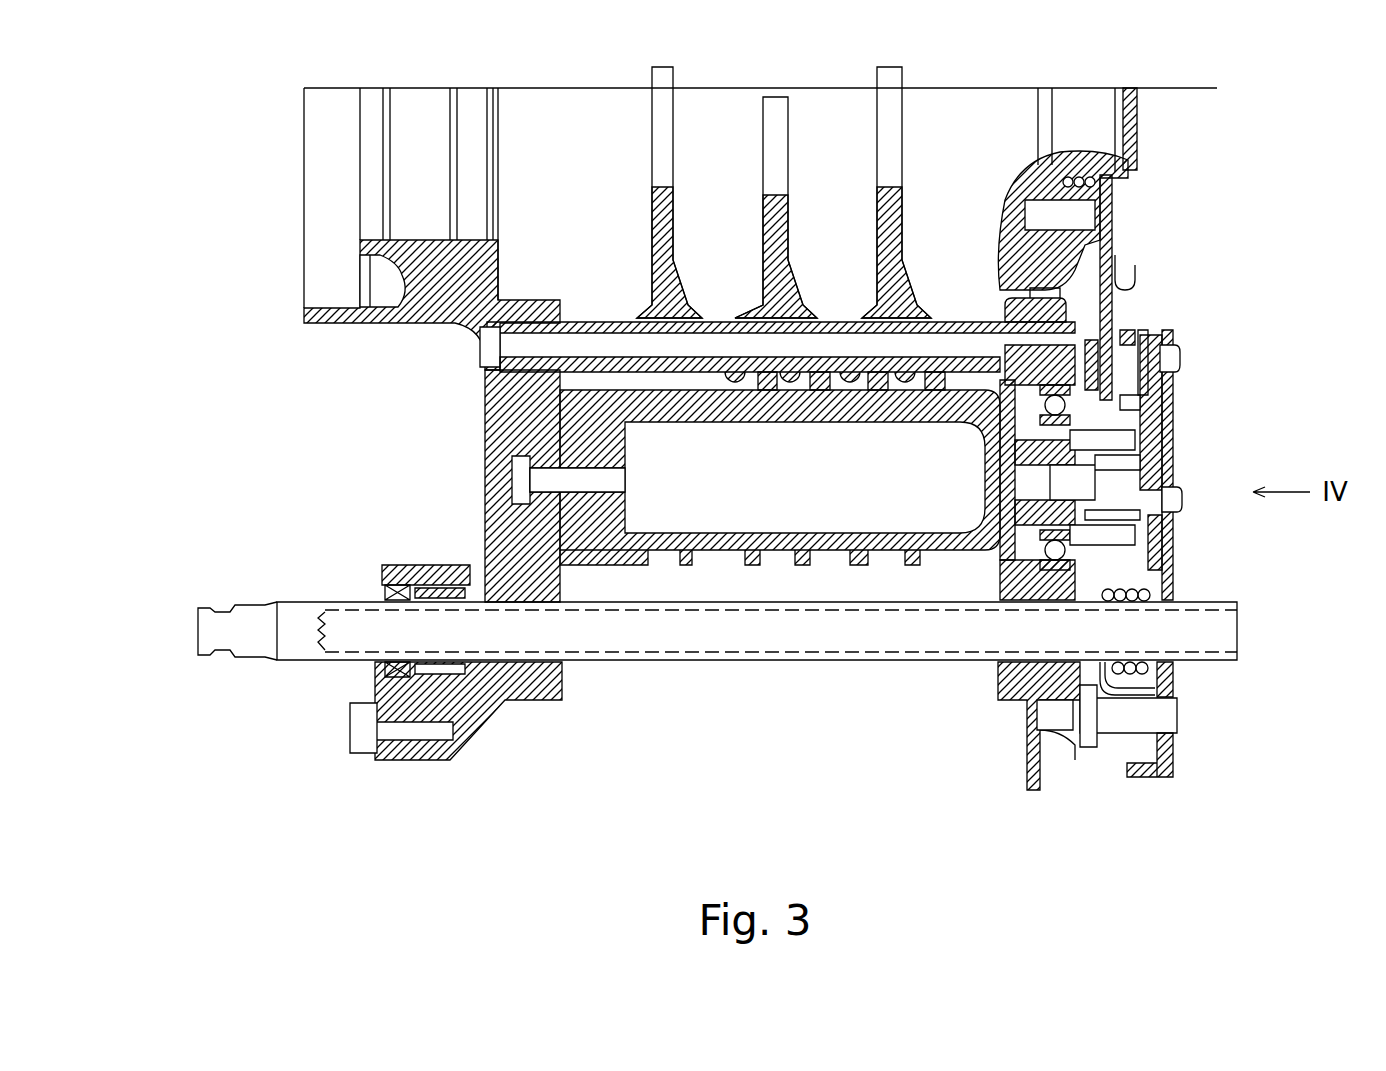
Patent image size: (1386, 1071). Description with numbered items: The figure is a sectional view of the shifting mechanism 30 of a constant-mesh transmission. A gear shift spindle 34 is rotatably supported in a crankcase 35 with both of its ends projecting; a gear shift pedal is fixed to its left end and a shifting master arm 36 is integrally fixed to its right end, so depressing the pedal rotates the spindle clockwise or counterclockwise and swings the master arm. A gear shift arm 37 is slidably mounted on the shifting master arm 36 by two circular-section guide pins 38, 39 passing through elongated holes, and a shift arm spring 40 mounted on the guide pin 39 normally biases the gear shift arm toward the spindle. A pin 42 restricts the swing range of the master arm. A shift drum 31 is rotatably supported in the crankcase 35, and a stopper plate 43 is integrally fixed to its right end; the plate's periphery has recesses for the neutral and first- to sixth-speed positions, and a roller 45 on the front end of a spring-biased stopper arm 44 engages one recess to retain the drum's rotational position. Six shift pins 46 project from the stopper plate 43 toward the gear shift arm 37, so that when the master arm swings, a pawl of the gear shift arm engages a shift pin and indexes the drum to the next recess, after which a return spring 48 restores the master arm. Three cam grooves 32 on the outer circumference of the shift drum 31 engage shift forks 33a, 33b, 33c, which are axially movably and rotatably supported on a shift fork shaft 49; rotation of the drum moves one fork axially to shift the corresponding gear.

The shifting mechanism 30 is at (1192, 322).
The shift drum 31 is at (940, 549).
The cam grooves 32 is at (666, 553).
The shift fork 33a is at (905, 212).
The shift fork 33b is at (790, 210).
The shift fork 33c is at (675, 208).
The gear shift spindle 34 is at (903, 642).
The crankcase 35 is at (480, 720).
The shifting master arm 36 is at (1173, 458).
The gear shift arm 37 is at (1173, 460).
The guide pin 38 is at (1178, 507).
The guide pin 39 is at (1178, 357).
The shift arm spring 40 is at (1168, 382).
The pin 42 is at (1115, 722).
The stopper plate 43 is at (1100, 557).
The stopper arm 44 is at (1112, 312).
The roller 45 is at (1086, 347).
The shift pins 46 is at (1203, 574).
The return spring 48 is at (1178, 680).
The shift fork shaft 49 is at (593, 320).